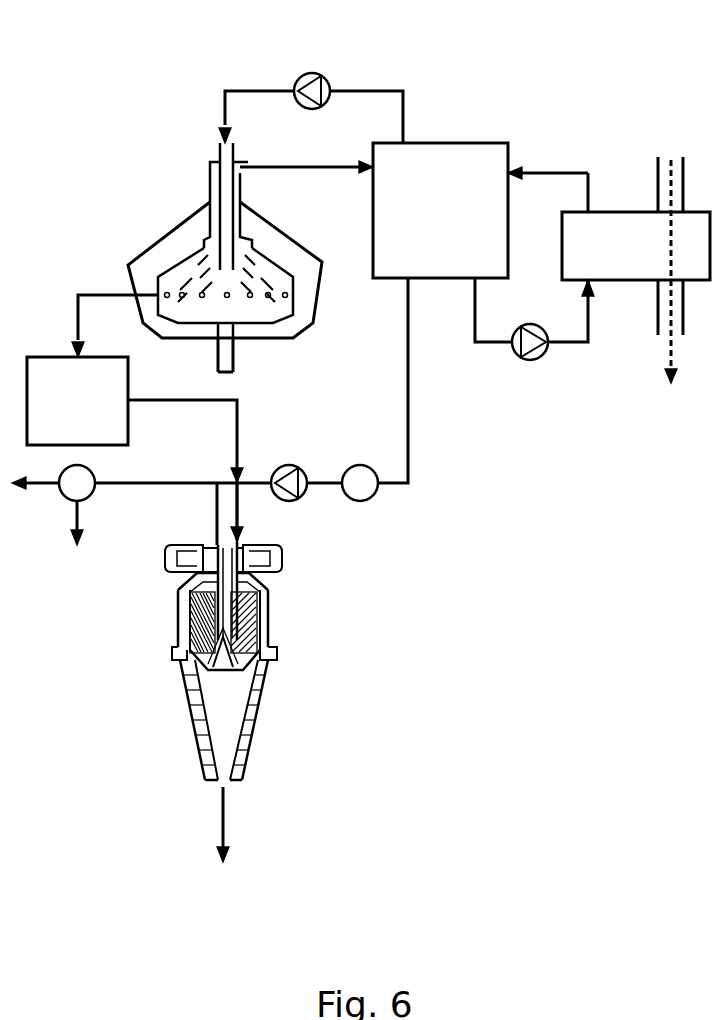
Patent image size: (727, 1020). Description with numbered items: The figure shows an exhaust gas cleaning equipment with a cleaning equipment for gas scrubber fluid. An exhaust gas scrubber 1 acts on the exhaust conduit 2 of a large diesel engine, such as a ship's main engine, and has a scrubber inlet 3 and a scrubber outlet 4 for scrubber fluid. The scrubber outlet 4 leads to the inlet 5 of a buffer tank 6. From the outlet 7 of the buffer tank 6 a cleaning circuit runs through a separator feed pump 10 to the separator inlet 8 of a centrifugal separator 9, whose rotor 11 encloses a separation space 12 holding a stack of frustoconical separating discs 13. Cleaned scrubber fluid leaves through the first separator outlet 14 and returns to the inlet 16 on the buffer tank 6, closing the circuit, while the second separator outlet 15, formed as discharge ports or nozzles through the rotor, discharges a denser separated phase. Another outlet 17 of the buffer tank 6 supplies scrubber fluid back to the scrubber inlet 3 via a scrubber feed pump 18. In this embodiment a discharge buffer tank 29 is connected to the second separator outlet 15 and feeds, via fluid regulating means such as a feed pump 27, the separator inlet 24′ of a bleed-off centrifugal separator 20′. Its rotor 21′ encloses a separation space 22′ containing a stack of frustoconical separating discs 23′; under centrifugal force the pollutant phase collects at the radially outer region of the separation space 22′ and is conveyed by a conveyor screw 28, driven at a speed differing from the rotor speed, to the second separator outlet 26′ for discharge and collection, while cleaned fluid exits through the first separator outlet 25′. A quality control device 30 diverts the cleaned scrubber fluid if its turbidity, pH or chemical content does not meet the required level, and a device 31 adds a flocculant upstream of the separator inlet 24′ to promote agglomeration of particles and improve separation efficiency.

The exhaust gas scrubber 1 is at (636, 246).
The exhaust conduit 2 is at (669, 155).
The scrubber inlet 3 is at (598, 283).
The scrubber outlet 4 is at (598, 207).
The inlet of buffer tank 5 is at (525, 165).
The buffer tank 6 is at (440, 210).
The outlet of buffer tank 7 is at (415, 137).
The separator inlet 8 is at (222, 140).
The centrifugal separator 9 is at (148, 217).
The separator feed pump 10 is at (309, 70).
The rotor 11 is at (277, 323).
The separation space 12 is at (210, 290).
The stack of frustoconical separating discs 13 is at (208, 260).
The first separator outlet 14 is at (257, 173).
The second separator outlet 15 is at (78, 292).
The inlet on buffer tank 16 is at (362, 173).
The outlet of buffer tank 17 is at (462, 283).
The scrubber feed pump 18 is at (532, 365).
The bleed-off centrifugal separator 20′ is at (163, 663).
The rotor 21′ is at (277, 663).
The separation space 22′ is at (190, 627).
The stack of frustoconical separating discs 23′ is at (180, 603).
The separator inlet 24′ is at (245, 540).
The first separator outlet 25′ is at (210, 538).
The second separator outlet 26′ is at (221, 872).
The feed pump 27 is at (289, 462).
The conveyor screw 28 is at (195, 722).
The discharge buffer tank 29 is at (135, 449).
The quality control device 30 is at (60, 503).
The device for addition of flocculant 31 is at (360, 462).